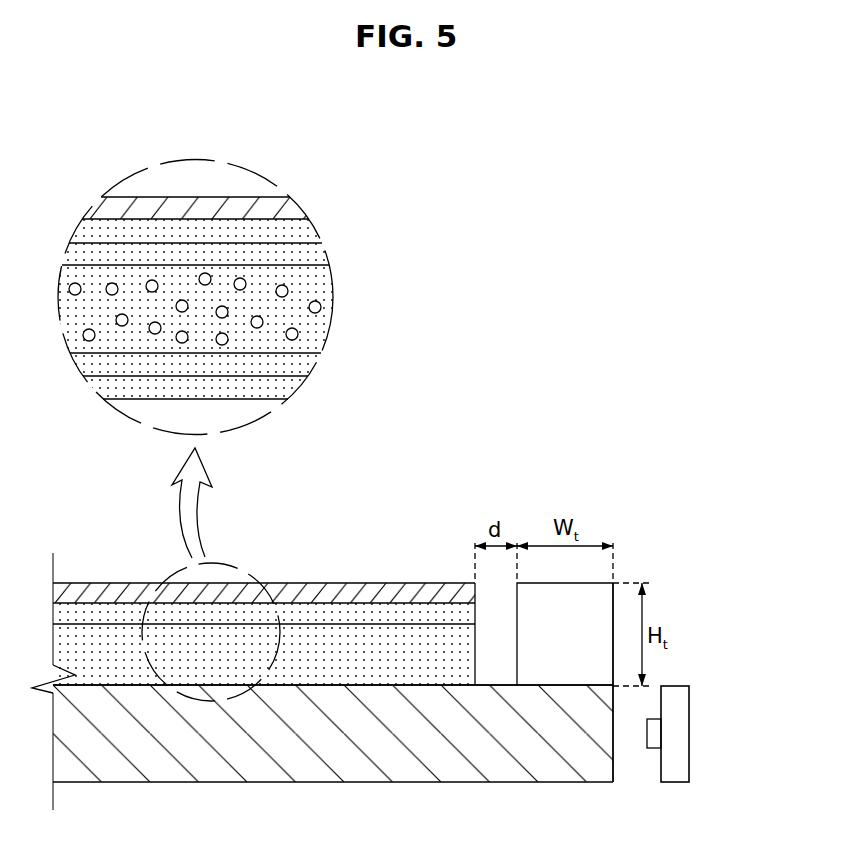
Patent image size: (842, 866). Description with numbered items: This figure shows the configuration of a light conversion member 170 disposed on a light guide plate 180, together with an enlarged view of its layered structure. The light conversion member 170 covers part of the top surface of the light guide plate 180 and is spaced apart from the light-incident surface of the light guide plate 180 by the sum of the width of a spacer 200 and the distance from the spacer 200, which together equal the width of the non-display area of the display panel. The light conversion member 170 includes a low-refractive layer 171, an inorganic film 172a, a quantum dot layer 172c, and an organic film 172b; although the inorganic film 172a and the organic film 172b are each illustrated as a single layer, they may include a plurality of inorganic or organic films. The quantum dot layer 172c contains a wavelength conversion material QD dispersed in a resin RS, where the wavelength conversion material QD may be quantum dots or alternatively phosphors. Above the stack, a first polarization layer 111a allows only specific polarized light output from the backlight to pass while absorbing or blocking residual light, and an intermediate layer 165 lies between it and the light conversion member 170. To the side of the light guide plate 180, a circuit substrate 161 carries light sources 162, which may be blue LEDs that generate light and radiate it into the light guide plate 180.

The first polarization layer 111a is at (145, 208).
The passivation layer 165 is at (206, 230).
The light conversion member 170 is at (331, 464).
The low-refractive layer 171 is at (268, 387).
The inorganic film 172a is at (290, 365).
The organic film 172b is at (303, 253).
The quantum dot layer 172c is at (258, 309).
The resin RS is at (310, 282).
The wavelength conversion material QD is at (322, 307).
The light guide plate 180 is at (327, 757).
The spacer 200 is at (565, 662).
The circuit substrate 161 is at (677, 753).
The light source 162 is at (655, 735).